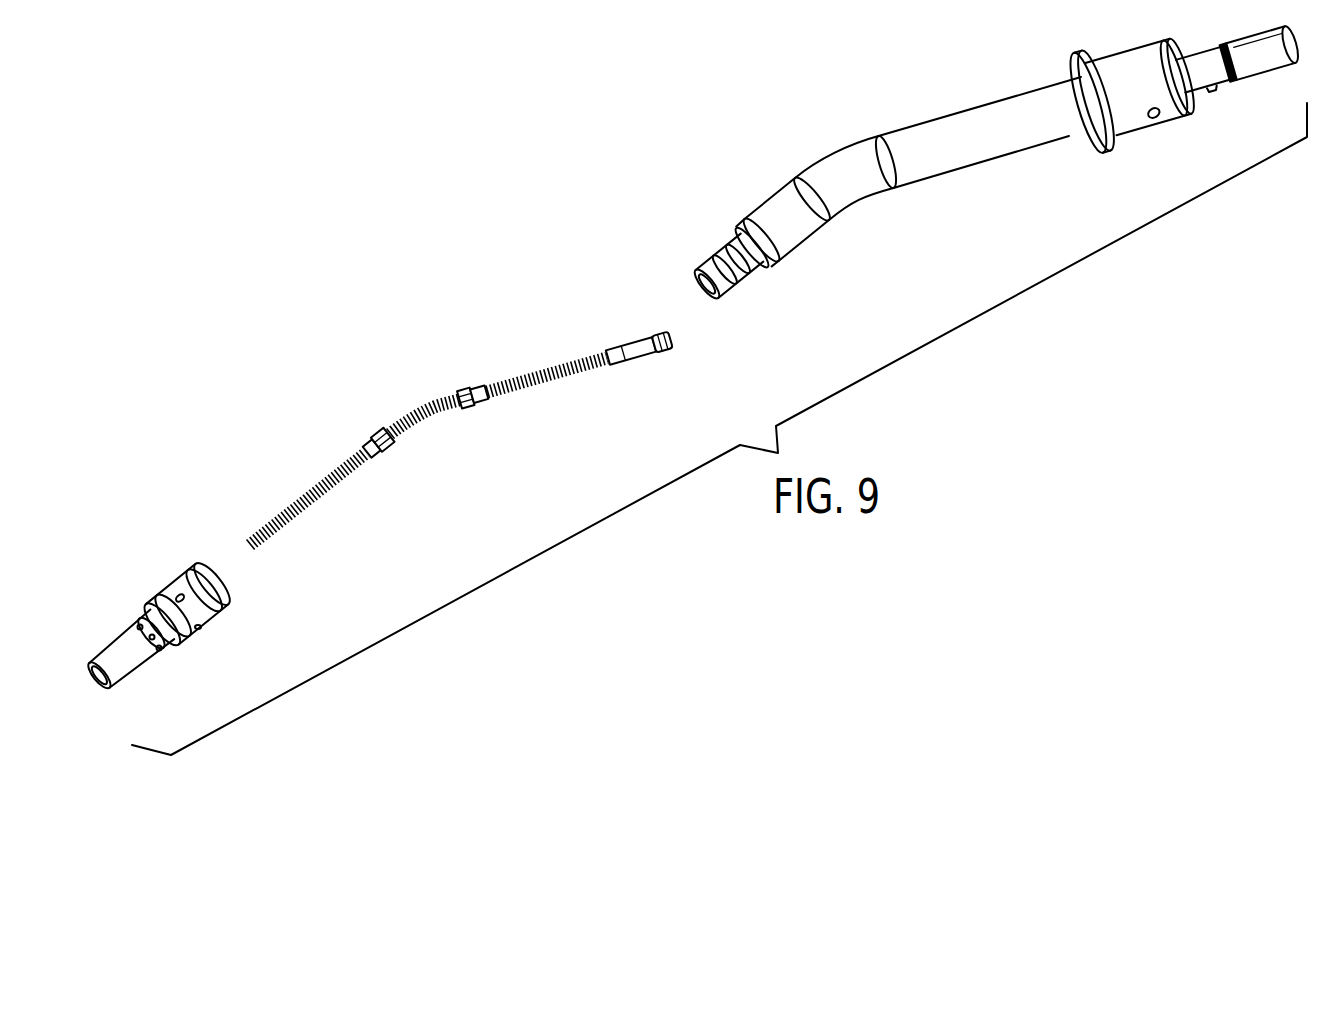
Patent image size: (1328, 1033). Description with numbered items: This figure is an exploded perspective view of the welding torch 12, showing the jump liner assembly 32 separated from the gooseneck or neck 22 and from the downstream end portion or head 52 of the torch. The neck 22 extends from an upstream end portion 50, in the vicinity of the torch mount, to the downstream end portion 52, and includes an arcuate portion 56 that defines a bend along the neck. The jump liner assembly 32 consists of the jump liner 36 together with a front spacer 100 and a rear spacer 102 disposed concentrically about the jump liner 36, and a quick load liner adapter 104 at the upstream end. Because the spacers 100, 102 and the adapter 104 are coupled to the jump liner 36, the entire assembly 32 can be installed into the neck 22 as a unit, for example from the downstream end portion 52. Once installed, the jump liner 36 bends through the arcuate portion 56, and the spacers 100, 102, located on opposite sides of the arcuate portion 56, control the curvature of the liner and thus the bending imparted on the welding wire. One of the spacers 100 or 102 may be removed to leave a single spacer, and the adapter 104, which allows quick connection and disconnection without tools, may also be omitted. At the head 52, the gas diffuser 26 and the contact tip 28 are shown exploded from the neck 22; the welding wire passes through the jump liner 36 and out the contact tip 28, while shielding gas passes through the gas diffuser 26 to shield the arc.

The welding torch 12 is at (621, 149).
The neck 22 is at (982, 103).
The arcuate portion 56 is at (835, 165).
The upstream end portion 50 is at (1258, 88).
The jump liner assembly 32 is at (489, 325).
The jump liner 36 is at (557, 366).
The front spacer 100 is at (373, 458).
The rear spacer 102 is at (483, 407).
The quick load liner adapter 104 is at (638, 356).
The downstream end portion or head 52 is at (143, 572).
The gas diffuser 26 is at (198, 630).
The contact tip 28 is at (125, 672).